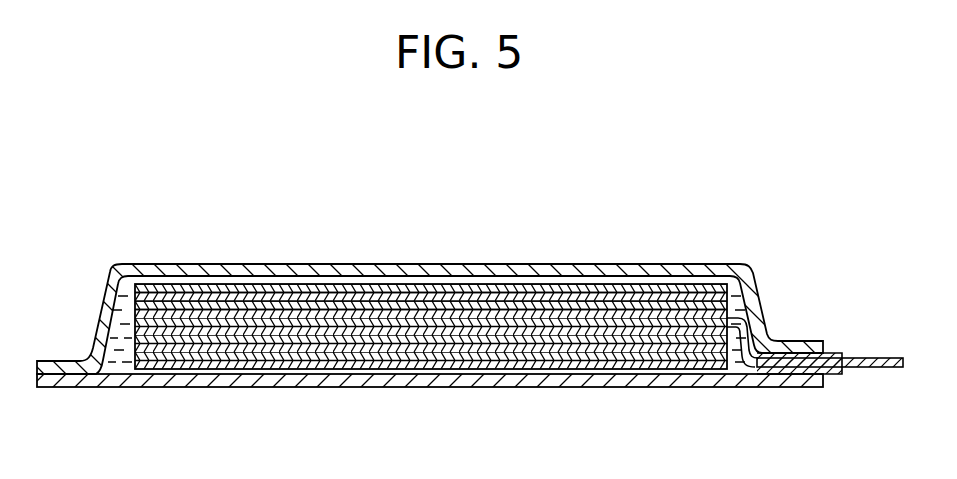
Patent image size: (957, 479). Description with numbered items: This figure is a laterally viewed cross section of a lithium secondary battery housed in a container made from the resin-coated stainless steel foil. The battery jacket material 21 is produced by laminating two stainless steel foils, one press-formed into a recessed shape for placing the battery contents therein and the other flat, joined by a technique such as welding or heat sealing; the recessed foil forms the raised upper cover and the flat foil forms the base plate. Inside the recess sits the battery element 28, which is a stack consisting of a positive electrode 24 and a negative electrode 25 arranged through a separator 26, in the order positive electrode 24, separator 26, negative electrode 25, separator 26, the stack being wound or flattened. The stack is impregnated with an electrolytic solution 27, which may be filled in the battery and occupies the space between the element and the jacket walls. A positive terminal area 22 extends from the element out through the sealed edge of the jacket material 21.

The battery jacket material 21 is at (250, 264).
The positive terminal area 22 is at (878, 368).
The positive electrode 24 is at (682, 303).
The negative electrode 25 is at (582, 290).
The separator 26 is at (632, 297).
The electrolytic solution 27 is at (118, 362).
The battery element 28 is at (555, 185).